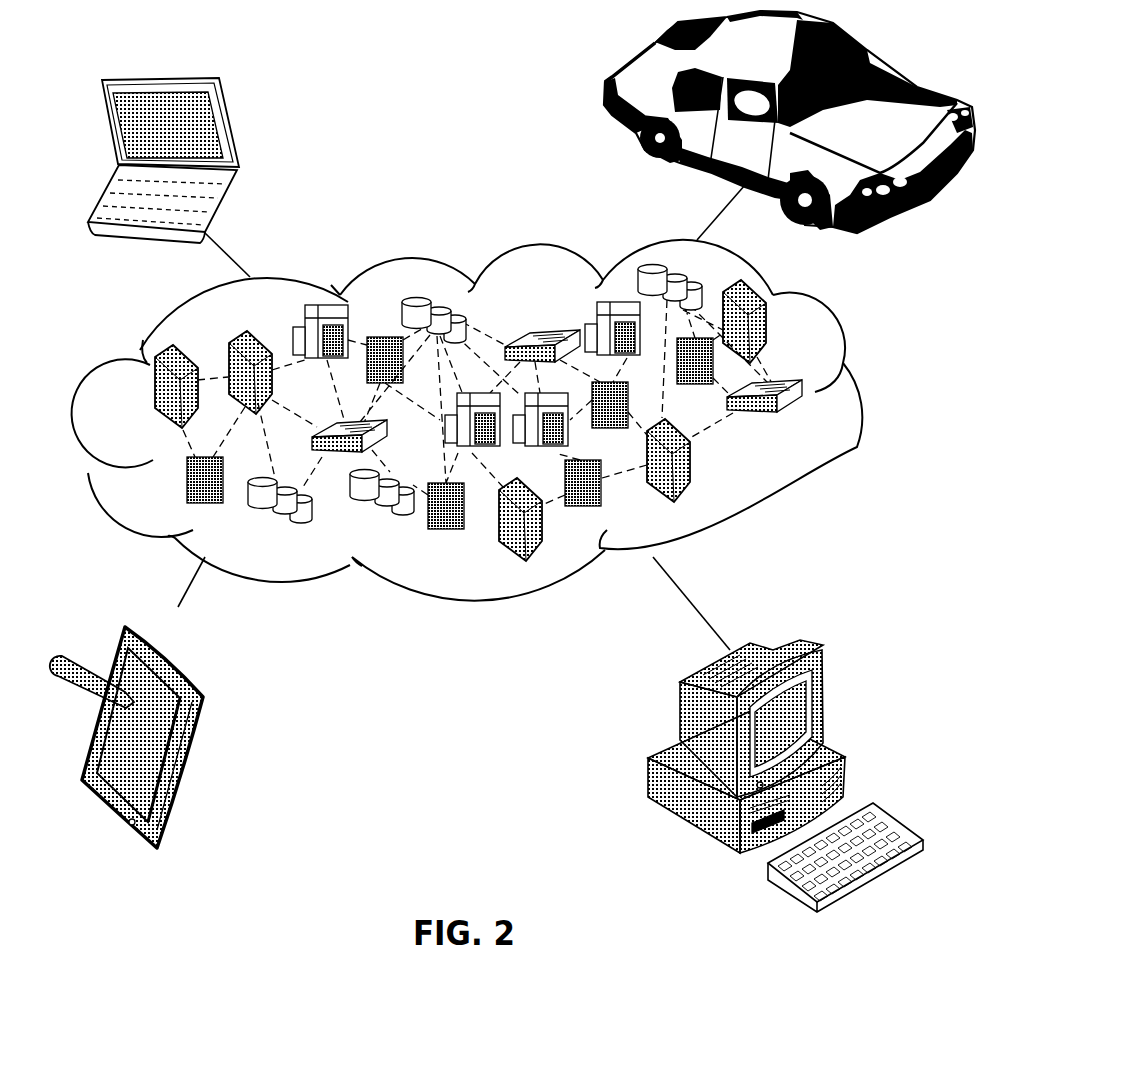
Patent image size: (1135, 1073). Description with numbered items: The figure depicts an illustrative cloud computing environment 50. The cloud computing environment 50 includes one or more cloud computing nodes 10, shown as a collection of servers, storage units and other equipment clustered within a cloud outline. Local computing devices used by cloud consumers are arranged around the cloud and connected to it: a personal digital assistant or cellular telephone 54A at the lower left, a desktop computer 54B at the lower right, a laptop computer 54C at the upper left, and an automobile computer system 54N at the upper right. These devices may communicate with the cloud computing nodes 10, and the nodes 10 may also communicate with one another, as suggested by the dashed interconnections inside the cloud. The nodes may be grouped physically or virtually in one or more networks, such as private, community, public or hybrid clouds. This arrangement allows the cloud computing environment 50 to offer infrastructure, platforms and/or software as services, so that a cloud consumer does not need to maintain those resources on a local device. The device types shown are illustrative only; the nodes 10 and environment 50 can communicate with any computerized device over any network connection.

The cloud computing environment 50 is at (862, 393).
The cloud computing nodes 10 is at (807, 423).
The personal digital assistant (PDA) or cellular telephone 54A is at (197, 727).
The desktop computer 54B is at (792, 640).
The laptop computer 54C is at (232, 128).
The automobile computer system 54N is at (601, 97).